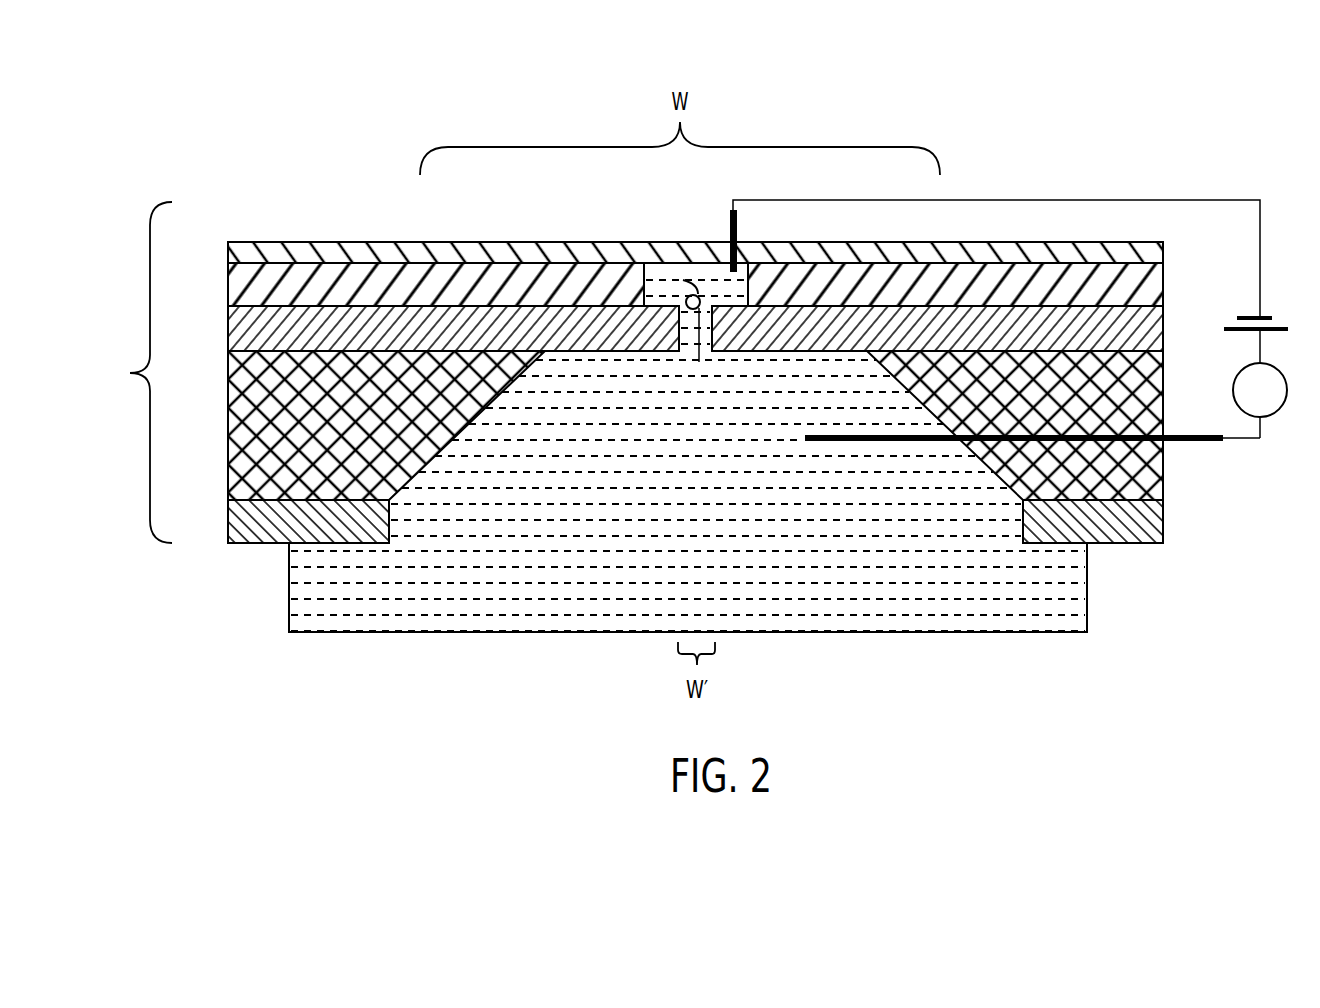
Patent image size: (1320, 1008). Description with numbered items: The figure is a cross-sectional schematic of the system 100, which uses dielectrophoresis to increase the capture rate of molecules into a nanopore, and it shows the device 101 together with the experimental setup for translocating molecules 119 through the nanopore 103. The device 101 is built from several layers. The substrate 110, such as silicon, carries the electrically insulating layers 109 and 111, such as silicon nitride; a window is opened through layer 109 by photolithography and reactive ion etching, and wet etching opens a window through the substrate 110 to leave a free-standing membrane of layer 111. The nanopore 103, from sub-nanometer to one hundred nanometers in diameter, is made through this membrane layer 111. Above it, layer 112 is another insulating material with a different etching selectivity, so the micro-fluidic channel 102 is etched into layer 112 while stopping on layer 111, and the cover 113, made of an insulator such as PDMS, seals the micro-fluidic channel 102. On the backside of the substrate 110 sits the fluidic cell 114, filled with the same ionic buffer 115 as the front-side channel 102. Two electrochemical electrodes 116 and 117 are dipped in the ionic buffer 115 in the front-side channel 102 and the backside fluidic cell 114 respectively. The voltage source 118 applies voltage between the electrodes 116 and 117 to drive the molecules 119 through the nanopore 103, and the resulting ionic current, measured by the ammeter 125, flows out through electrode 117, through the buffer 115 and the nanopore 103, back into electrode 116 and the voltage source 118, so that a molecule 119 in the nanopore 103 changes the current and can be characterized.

The system 100 is at (1002, 76).
The device 101 is at (629, 372).
The micro-fluidic channel 102 is at (645, 288).
The nanopore 103 is at (707, 362).
The layer 109 is at (233, 524).
The substrate 110 is at (234, 409).
The layer (membrane) 111 is at (234, 327).
The layer 112 is at (234, 283).
The cover 113 is at (234, 250).
The fluidic cell 114 is at (278, 600).
The ionic buffer 115 is at (704, 508).
The electrochemical electrode 116 is at (730, 224).
The electrochemical electrode 117 is at (1196, 442).
The voltage source 118 is at (1226, 300).
The molecule 119 is at (696, 357).
The ammeter 125 is at (1237, 390).